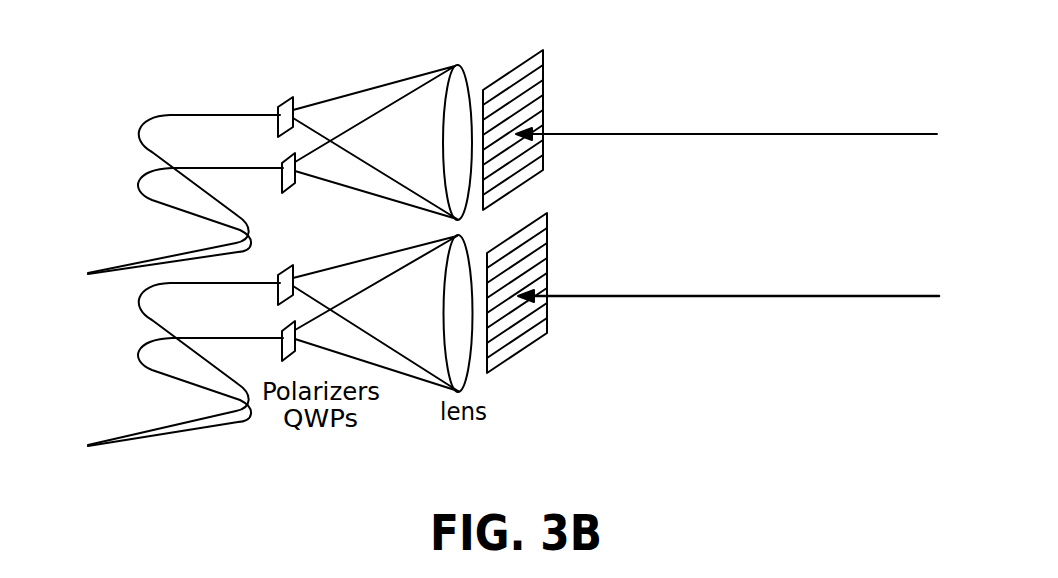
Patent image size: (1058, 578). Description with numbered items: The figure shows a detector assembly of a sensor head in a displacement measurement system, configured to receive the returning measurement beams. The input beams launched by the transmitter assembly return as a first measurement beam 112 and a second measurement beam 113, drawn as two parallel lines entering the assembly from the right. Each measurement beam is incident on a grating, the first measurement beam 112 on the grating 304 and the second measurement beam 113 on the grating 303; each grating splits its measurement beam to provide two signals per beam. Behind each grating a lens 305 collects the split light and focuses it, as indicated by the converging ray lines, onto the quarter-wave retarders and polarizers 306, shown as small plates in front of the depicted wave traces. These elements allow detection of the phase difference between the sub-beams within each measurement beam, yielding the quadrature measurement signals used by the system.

The first measurement beam 112 is at (818, 133).
The second measurement beam 113 is at (818, 296).
The grating 303 is at (530, 347).
The grating 304 is at (545, 82).
The lens 305 is at (455, 65).
The quarter-wave retarders and polarizers 306 is at (285, 96).